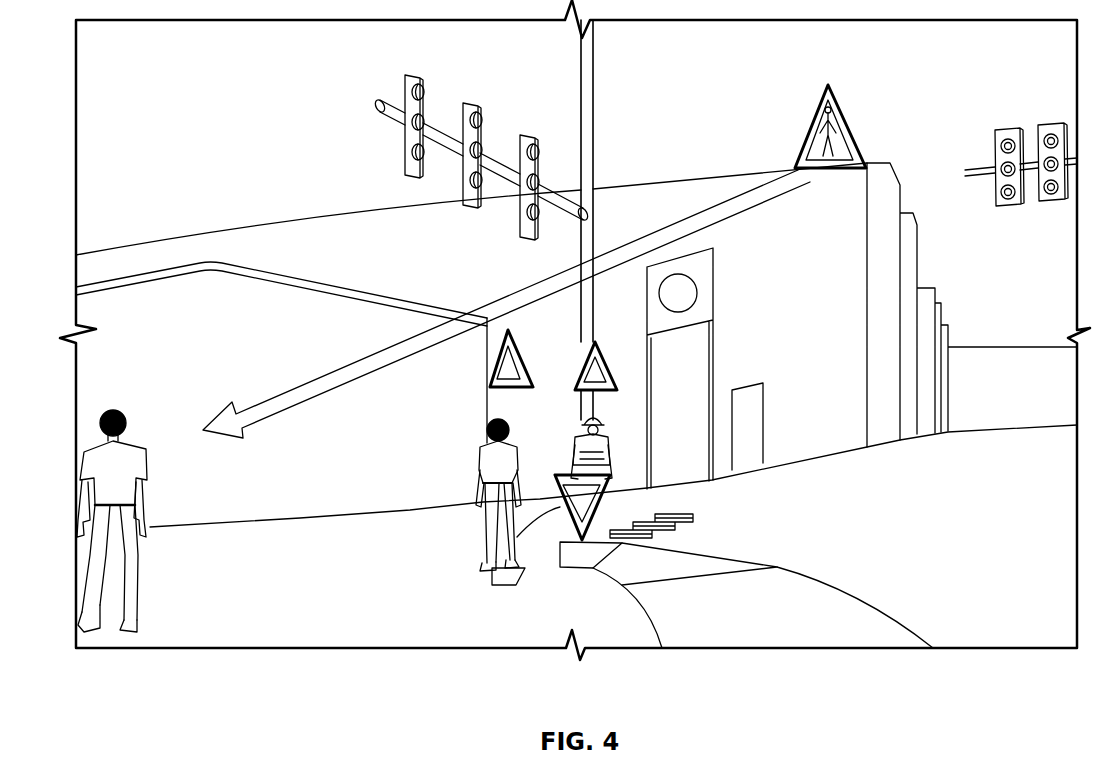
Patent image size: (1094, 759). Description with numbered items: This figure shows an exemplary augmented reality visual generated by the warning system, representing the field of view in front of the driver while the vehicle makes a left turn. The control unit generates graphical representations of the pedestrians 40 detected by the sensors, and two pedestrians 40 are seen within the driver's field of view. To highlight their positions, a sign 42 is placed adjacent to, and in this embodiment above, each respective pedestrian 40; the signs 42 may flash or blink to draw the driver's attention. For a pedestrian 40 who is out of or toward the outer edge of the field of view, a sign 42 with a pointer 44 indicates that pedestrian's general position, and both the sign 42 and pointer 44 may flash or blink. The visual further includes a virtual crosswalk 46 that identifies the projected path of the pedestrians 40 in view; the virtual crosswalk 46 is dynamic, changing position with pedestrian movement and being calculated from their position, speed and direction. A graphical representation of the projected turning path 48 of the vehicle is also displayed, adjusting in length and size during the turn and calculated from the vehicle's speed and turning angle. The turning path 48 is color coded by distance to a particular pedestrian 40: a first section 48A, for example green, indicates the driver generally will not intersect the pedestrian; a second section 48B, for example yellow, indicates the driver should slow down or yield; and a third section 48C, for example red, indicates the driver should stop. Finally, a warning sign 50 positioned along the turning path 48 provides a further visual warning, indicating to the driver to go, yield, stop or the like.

The pedestrian 40 is at (128, 463).
The sign 42 is at (856, 129).
The pointer 44 is at (752, 197).
The virtual crosswalk 46 is at (668, 516).
The turning path 48 is at (729, 586).
The first section 48A is at (781, 638).
The second section 48B is at (690, 563).
The third section 48C is at (573, 557).
The warning sign 50 is at (482, 568).